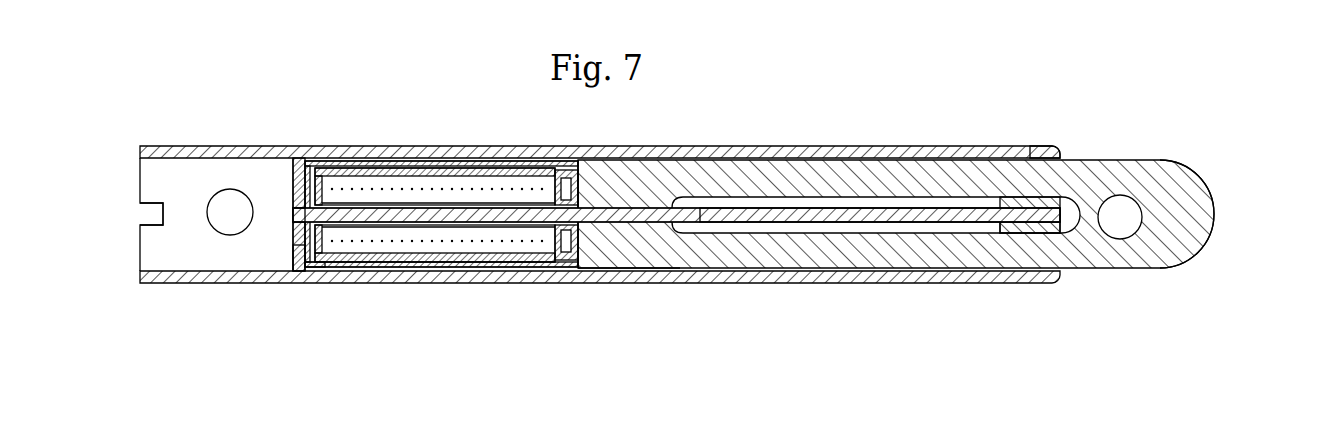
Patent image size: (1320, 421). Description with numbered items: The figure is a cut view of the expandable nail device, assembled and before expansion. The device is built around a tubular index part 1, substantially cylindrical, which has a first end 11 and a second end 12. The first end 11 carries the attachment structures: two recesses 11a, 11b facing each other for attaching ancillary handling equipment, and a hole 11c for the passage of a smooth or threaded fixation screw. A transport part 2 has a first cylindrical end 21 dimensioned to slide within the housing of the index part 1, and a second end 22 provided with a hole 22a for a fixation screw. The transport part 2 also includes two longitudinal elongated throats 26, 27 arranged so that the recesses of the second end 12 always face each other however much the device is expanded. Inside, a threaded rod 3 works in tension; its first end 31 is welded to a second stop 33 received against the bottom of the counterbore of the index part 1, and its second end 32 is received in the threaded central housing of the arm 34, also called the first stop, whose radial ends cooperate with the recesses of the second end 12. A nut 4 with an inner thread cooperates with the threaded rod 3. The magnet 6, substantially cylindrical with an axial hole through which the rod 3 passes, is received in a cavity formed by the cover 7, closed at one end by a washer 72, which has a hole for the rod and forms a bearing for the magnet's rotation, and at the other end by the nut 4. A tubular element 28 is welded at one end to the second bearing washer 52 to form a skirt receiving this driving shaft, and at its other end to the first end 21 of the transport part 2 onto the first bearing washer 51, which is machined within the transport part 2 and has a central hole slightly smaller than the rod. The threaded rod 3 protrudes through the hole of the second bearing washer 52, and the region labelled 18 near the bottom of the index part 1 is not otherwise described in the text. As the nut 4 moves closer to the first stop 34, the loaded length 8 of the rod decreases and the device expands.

The index part 1 is at (762, 291).
The transport part 2 is at (924, 215).
The threaded rod 3 is at (778, 215).
The nut 4 is at (567, 190).
The magnet 6 is at (394, 242).
The lower housing wall 7 is at (508, 255).
The loaded length 8 is at (836, 214).
The first end 11 is at (198, 195).
The recess 11a is at (144, 136).
The recess 11b is at (152, 213).
The hole 11c is at (230, 212).
The second end 12 is at (1027, 152).
The inner tube end 18 is at (305, 272).
The first cylindrical end 21 is at (628, 245).
The second end 22 is at (1184, 228).
The hole 22a is at (1120, 217).
The longitudinal elongated throat 26 is at (876, 277).
The longitudinal elongated throat 27 is at (877, 229).
The tubular element 28 is at (424, 164).
The first end 31 is at (297, 215).
The second end 32 is at (1035, 216).
The second stop 33 is at (297, 172).
The arm 34 is at (1020, 230).
The first bearing washer 51 is at (585, 247).
The second bearing washer 52 is at (297, 262).
The washer 72 is at (322, 182).